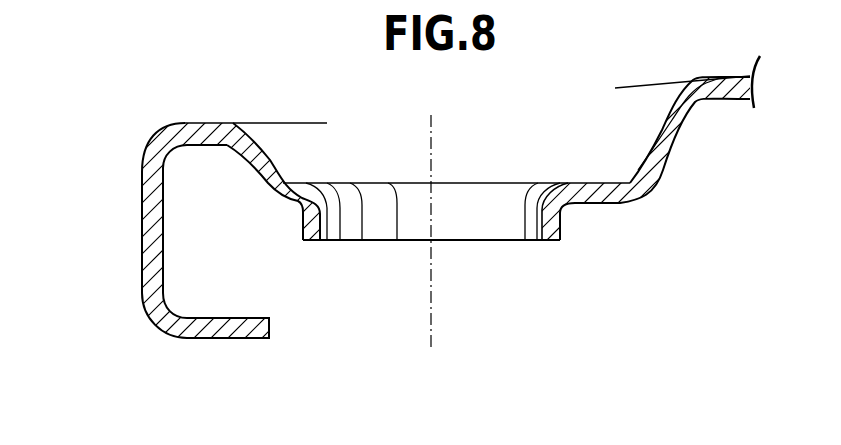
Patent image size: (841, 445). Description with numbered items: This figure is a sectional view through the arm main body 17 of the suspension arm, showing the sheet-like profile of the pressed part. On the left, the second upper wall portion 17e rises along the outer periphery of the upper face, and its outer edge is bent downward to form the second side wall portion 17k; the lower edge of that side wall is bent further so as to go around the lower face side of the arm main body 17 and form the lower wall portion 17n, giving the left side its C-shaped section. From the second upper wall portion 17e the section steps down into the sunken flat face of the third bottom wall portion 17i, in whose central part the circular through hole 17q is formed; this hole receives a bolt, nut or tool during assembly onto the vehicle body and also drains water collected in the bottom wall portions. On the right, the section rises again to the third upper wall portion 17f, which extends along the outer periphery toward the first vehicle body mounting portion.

The arm main body 17 is at (660, 195).
The second upper wall portion 17e is at (200, 128).
The third upper wall portion 17f is at (718, 78).
The third bottom wall portion 17i is at (478, 182).
The second side wall portion 17k is at (145, 245).
The lower wall portion 17n is at (230, 327).
The through hole 17q is at (477, 228).